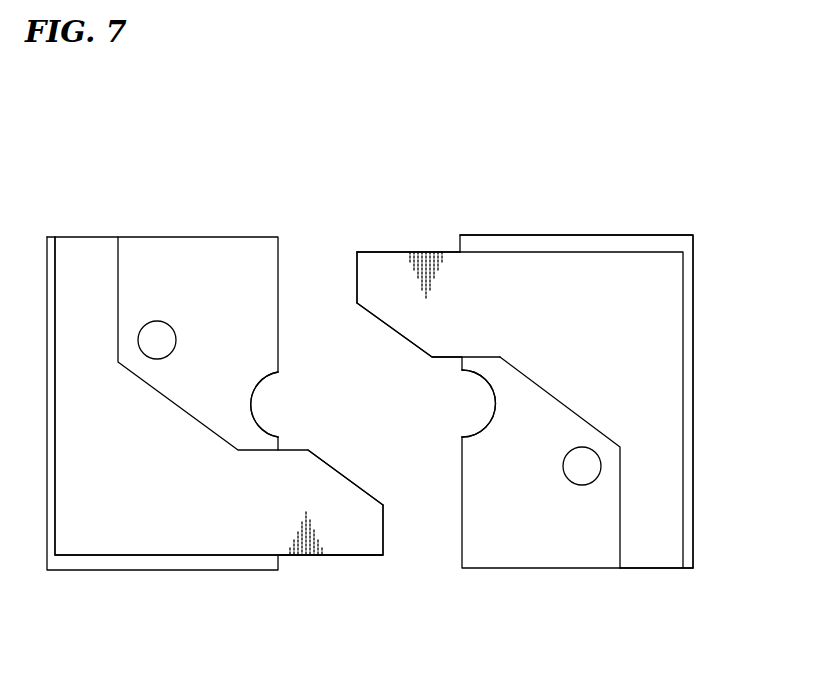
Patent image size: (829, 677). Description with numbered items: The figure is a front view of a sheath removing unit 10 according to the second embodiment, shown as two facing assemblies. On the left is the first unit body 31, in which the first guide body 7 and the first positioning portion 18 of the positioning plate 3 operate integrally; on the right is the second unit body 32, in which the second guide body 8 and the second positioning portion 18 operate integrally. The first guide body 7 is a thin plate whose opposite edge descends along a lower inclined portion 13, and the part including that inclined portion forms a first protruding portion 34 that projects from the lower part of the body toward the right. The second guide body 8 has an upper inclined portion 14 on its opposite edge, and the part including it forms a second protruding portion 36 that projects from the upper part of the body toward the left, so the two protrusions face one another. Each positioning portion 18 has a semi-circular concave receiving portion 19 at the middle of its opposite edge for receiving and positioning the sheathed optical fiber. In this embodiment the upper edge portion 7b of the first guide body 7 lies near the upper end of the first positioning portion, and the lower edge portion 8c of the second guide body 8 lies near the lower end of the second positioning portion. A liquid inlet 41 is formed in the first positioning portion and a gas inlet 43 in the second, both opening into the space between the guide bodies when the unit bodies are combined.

The positioning plate 3 is at (610, 588).
The first guide body 7 is at (337, 560).
The upper edge portion 7b is at (85, 237).
The second guide body 8 is at (405, 237).
The lower edge portion 8c is at (670, 570).
The sheath removing unit 10 is at (690, 183).
The lower inclined portion 13 is at (355, 482).
The upper inclined portion 14 is at (385, 323).
The positioning portions 18 is at (213, 237).
The concave receiving portion 19 is at (248, 405).
The first unit body 31 is at (168, 208).
The second unit body 32 is at (587, 208).
The first protruding portion 34 is at (383, 540).
The second protruding portion 36 is at (357, 268).
The liquid inlet 41 is at (167, 338).
The gas inlet 43 is at (568, 472).